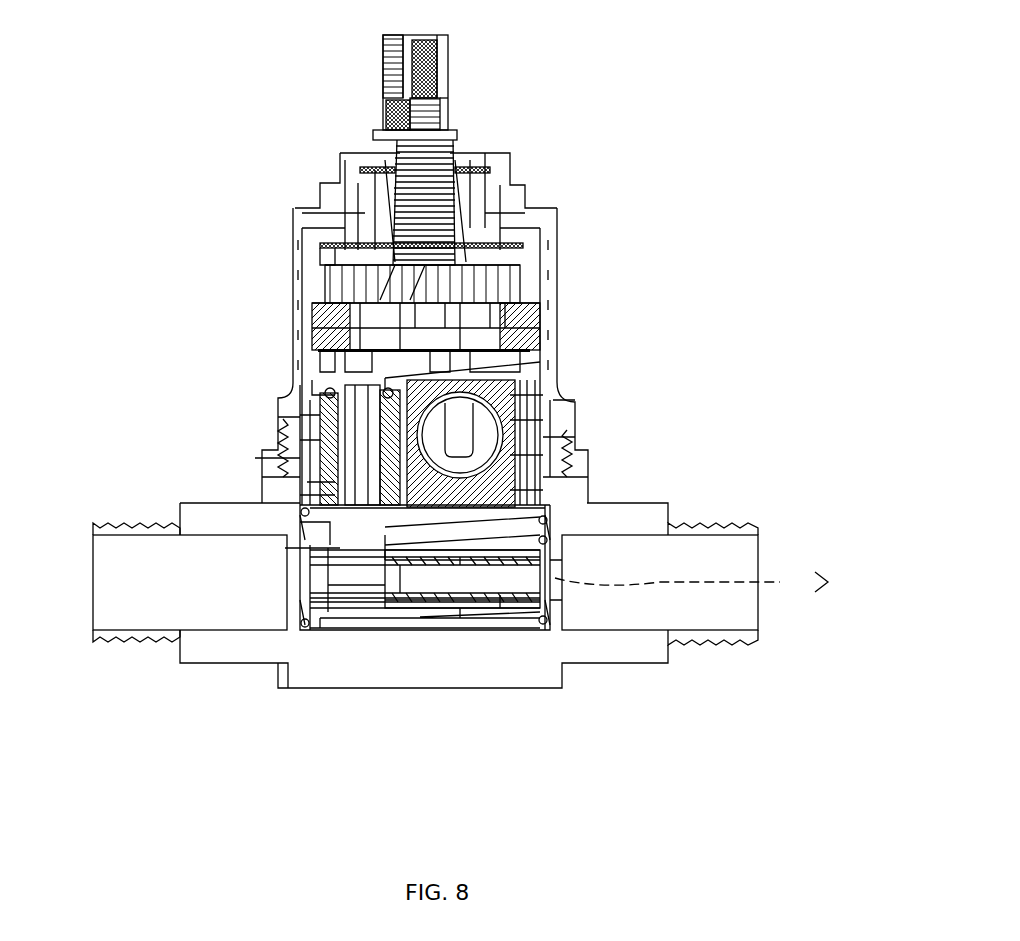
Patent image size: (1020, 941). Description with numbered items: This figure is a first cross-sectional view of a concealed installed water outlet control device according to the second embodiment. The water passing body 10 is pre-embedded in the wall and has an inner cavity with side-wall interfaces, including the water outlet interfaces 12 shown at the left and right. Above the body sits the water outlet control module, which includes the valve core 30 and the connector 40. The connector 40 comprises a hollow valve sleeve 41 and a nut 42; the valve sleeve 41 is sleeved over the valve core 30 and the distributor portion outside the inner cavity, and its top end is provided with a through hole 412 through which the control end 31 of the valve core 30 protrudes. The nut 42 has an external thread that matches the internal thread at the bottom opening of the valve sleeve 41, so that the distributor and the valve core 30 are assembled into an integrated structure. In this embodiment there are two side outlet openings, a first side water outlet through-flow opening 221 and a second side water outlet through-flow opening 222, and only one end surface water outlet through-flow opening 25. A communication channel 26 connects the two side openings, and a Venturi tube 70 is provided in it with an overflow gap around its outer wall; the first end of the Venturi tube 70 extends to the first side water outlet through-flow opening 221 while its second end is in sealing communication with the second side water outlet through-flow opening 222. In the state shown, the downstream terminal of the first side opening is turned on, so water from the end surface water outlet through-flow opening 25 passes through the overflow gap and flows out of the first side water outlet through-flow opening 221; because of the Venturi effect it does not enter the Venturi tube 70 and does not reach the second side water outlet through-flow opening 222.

The water passing body 10 is at (333, 673).
The water outlet interface 12 is at (145, 620).
The end surface water outlet through-flow opening 25 is at (358, 532).
The communication channel 26 is at (492, 627).
The valve core 30 is at (445, 242).
The control end 31 is at (446, 77).
The connector 40 is at (703, 332).
The valve sleeve 41 is at (553, 364).
The nut 42 is at (557, 440).
The Venturi tube 70 is at (428, 600).
The first side water outlet through-flow opening 221 is at (560, 577).
The second side water outlet through-flow opening 222 is at (290, 580).
The through hole 412 is at (512, 197).